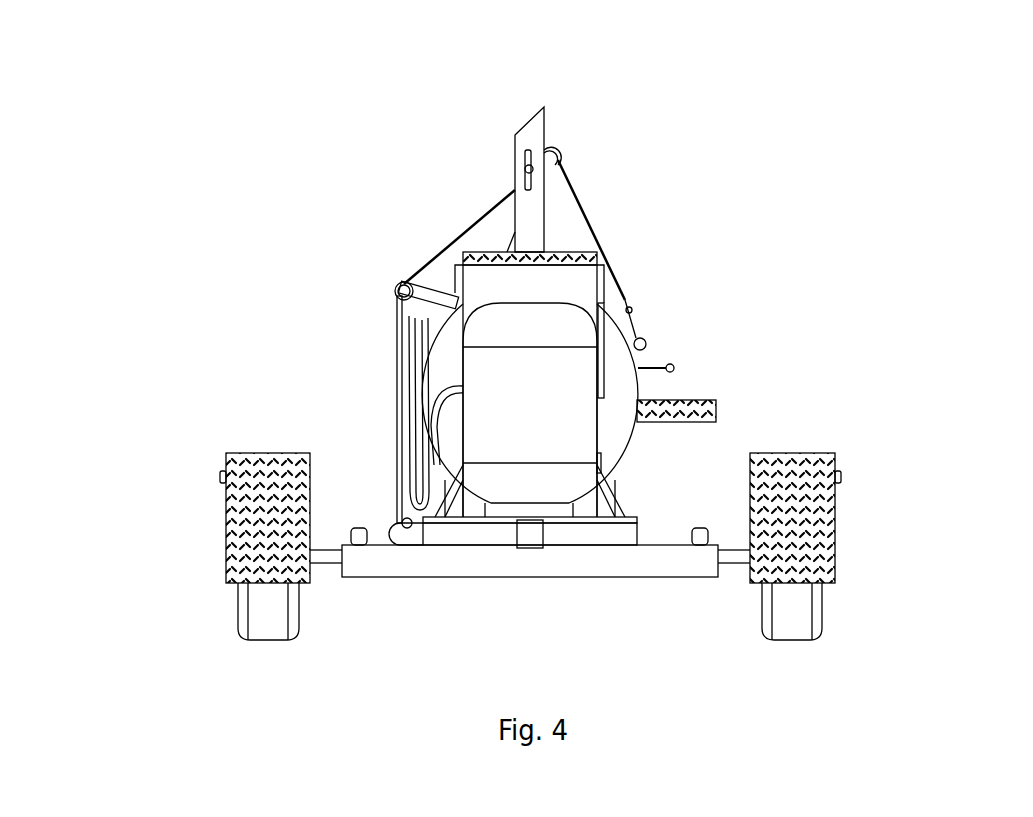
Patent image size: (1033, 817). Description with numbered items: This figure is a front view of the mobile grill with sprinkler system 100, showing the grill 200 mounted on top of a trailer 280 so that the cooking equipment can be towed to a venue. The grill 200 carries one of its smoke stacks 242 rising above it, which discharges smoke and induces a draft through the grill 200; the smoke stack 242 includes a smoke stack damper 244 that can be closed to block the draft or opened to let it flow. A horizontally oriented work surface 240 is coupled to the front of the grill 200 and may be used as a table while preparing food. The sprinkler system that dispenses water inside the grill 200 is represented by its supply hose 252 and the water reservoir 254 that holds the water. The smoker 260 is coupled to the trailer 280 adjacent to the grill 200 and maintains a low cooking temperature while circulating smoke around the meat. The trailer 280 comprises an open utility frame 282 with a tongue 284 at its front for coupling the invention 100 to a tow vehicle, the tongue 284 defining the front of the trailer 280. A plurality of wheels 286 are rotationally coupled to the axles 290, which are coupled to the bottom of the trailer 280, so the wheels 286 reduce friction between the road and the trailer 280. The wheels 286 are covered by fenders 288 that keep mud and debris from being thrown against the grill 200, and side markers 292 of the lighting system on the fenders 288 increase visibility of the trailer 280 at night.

The mobile grill with sprinkler system 100 is at (87, 140).
The grill 200 is at (613, 418).
The work surface 240 is at (716, 404).
The smoke stacks 242 is at (547, 112).
The smoke stack damper 244 is at (524, 167).
The supply hose 252 is at (403, 436).
The water reservoir 254 is at (512, 448).
The smoker 260 is at (578, 281).
The trailer 280 is at (897, 452).
The frame 282 is at (610, 538).
The tongue 284 is at (530, 550).
The wheels 286 is at (260, 643).
The fenders 288 is at (226, 553).
The axles 290 is at (328, 566).
The side markers 292 is at (220, 476).